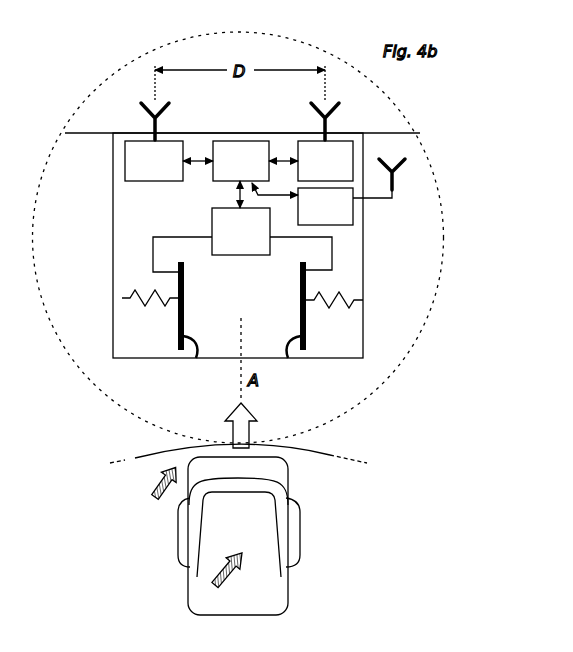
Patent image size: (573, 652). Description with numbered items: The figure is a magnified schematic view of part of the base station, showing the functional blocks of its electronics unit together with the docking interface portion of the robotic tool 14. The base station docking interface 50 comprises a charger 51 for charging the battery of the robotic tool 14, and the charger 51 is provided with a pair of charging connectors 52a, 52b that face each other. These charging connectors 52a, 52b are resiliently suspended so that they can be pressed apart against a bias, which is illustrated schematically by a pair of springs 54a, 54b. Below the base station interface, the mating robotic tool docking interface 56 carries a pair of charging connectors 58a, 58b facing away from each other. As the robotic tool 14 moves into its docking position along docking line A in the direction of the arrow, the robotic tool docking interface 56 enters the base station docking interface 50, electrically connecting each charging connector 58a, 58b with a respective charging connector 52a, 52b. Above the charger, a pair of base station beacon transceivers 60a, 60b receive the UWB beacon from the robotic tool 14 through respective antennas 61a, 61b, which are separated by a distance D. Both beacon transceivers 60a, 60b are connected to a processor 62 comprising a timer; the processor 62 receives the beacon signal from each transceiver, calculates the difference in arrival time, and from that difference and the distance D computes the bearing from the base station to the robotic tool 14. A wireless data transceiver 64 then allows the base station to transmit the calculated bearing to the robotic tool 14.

The robotic tool 14 is at (310, 452).
The base station docking interface 50 is at (210, 392).
The charger 51 is at (241, 231).
The charging connector 52a is at (200, 362).
The charging connector 52b is at (284, 352).
The spring 54a is at (143, 293).
The spring 54b is at (340, 300).
The robotic tool docking interface 56 is at (218, 536).
The charging connector 58a is at (180, 549).
The charging connector 58b is at (297, 547).
The base station beacon transceiver 60a is at (154, 161).
The base station beacon transceiver 60b is at (325, 161).
The antenna 61a is at (150, 124).
The antenna 61b is at (333, 126).
The processor 62 is at (241, 161).
The wireless data transceiver 64 is at (351, 192).